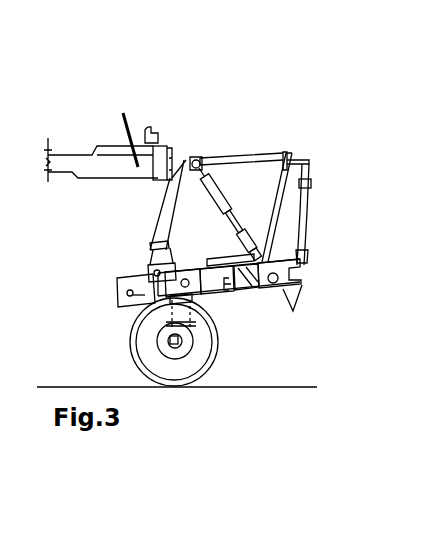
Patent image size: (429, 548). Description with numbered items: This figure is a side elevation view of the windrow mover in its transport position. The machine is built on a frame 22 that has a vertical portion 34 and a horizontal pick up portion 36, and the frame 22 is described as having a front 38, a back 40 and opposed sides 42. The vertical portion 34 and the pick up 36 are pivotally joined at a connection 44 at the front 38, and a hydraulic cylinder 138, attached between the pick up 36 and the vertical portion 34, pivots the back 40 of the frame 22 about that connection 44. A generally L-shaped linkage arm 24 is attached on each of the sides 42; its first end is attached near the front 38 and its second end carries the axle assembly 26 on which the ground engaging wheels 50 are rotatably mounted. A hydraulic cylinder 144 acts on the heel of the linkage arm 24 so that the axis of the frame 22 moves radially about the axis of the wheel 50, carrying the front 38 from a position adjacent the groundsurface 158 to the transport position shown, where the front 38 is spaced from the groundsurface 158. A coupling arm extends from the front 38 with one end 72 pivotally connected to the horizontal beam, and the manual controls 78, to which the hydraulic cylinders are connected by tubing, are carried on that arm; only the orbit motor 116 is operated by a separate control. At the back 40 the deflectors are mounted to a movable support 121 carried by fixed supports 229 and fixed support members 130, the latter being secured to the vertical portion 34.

The end of coupling arm 72 is at (70, 162).
The manual controls 78 is at (160, 135).
The vertical portion 34 is at (158, 201).
The frame 22 is at (185, 156).
The hydraulic cylinder 138 is at (255, 153).
The fixed support member 130 is at (277, 155).
The fixed support 229 is at (308, 172).
The movable support 121 is at (307, 243).
The hydraulic cylinder 144 is at (245, 300).
The linkage arm 24 is at (213, 292).
The horizontal pick up portion 36 is at (228, 297).
The opposed sides 42 is at (268, 298).
The back 40 is at (300, 282).
The orbit motor 116 is at (298, 302).
The connection 44 is at (150, 244).
The front 38 is at (113, 282).
The axle assembly 26 is at (155, 333).
The ground engaging wheels 50 is at (150, 360).
The groundsurface 158 is at (168, 378).